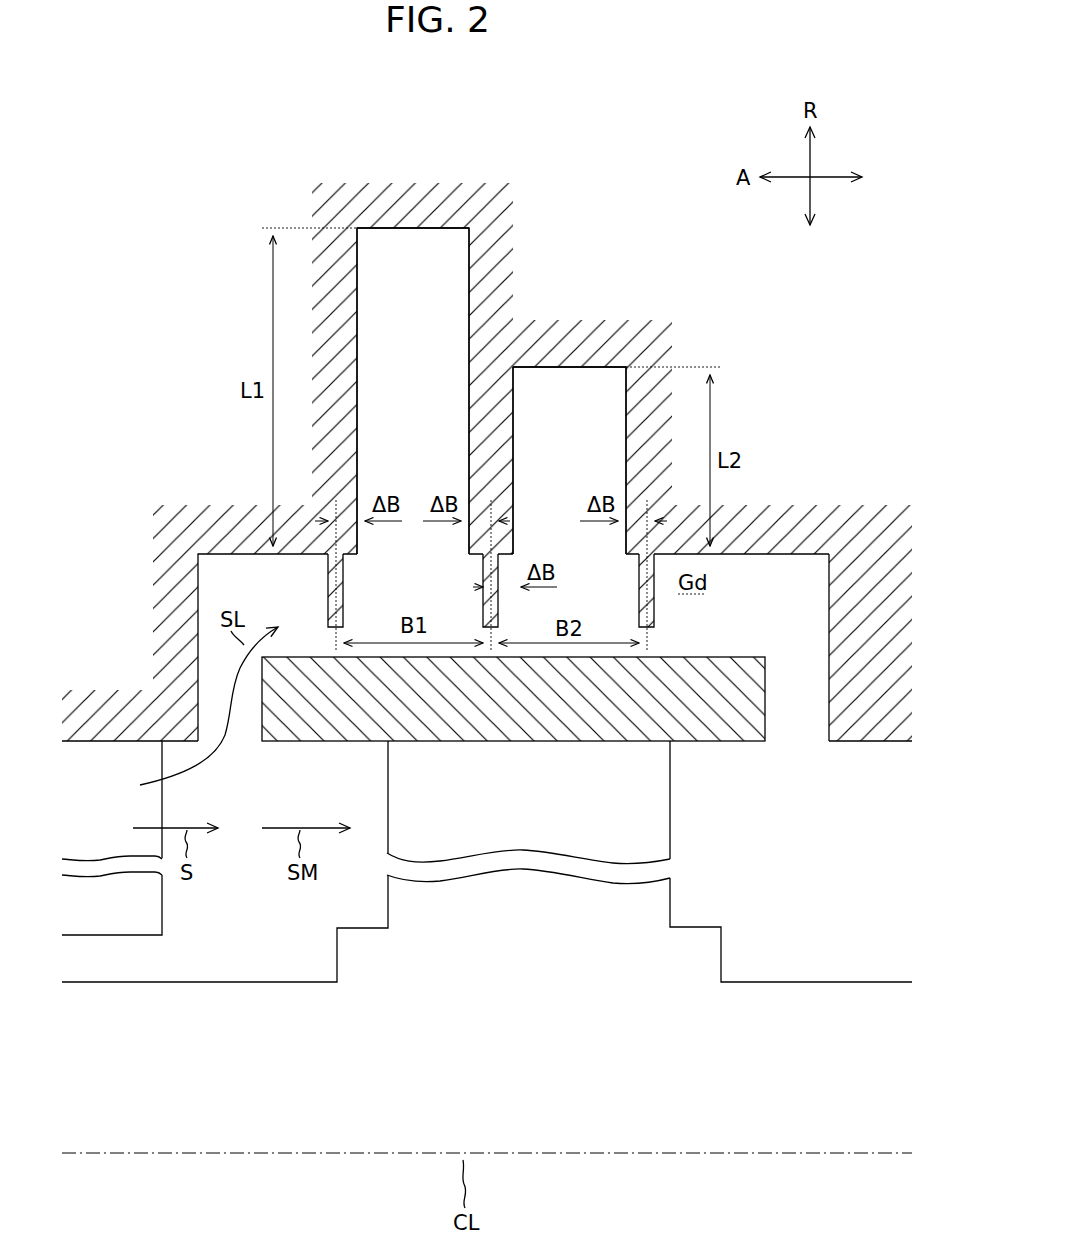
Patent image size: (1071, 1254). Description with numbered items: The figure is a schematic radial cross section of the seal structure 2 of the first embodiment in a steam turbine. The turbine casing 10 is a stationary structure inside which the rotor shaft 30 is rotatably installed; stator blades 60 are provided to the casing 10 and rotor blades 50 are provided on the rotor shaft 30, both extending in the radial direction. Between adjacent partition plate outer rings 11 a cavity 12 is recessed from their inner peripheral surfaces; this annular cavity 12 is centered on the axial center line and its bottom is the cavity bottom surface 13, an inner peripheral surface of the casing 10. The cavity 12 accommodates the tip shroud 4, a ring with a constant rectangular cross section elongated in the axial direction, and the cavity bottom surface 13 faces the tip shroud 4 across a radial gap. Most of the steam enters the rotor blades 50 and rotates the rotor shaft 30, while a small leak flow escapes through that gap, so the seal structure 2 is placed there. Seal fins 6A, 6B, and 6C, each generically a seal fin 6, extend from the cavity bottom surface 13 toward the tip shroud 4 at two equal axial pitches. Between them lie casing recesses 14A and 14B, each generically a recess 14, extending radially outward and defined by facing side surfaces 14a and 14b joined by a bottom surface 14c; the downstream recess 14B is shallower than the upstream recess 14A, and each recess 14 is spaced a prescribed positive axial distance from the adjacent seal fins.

The seal structure 2 is at (266, 198).
The tip shroud 4 is at (728, 657).
The seal fin 6 is at (463, 590).
The seal fin 6A is at (328, 598).
The seal fin 6B is at (483, 600).
The seal fin 6C is at (639, 600).
The turbine casing 10 is at (770, 277).
The partition plate outer ring 11 is at (81, 741).
The cavity 12 is at (797, 742).
The cavity bottom surface 13 is at (788, 554).
The recess 14 is at (491, 391).
The casing recess 14A is at (433, 411).
The casing recess 14B is at (562, 531).
The side surface 14a is at (357, 302).
The side surface 14b is at (469, 327).
The bottom surface 14c is at (413, 228).
The rotor shaft 30 is at (821, 982).
The rotor blade 50 is at (670, 832).
The stator blade 60 is at (162, 906).